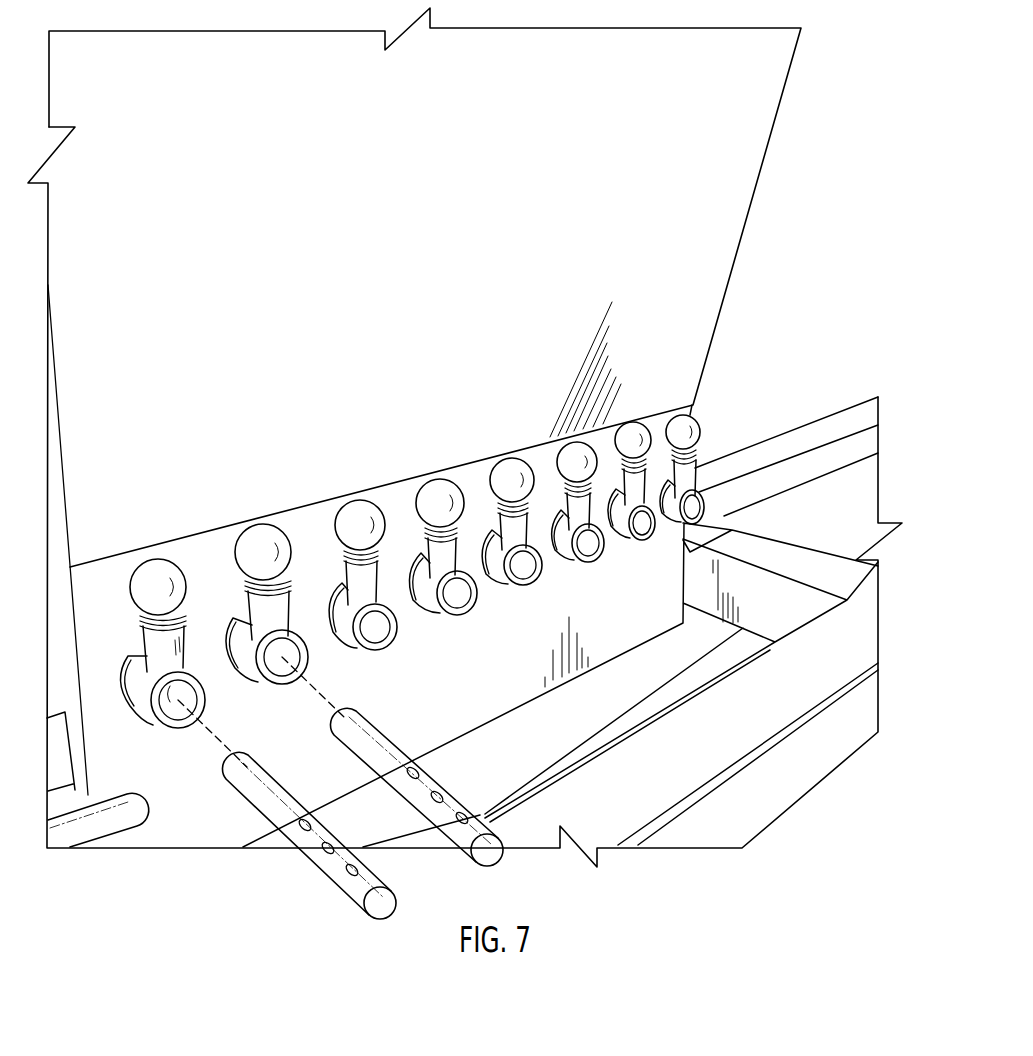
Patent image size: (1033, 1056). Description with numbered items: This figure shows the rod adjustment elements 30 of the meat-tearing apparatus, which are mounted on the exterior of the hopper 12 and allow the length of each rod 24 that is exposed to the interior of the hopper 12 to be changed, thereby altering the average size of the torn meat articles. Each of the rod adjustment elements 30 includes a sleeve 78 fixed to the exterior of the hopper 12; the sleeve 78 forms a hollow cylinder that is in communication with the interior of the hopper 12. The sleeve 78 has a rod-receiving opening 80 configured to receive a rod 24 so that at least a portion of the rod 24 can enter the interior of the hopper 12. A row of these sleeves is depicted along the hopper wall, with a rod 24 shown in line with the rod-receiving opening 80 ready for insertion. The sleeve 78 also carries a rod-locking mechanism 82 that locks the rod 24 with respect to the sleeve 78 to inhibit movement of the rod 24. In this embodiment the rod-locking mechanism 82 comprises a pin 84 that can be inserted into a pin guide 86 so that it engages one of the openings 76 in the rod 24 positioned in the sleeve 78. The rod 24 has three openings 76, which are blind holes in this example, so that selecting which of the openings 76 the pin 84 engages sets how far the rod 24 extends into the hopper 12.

The hopper 12 is at (446, 240).
The rod adjustment elements 30 is at (392, 588).
The rod-locking mechanism 82 is at (173, 631).
The pin 84 is at (157, 566).
The pin guide 86 is at (176, 641).
The rod-receiving opening 80 is at (198, 702).
The sleeve 78 is at (133, 703).
The openings 76 is at (350, 867).
The rod 24 is at (290, 831).